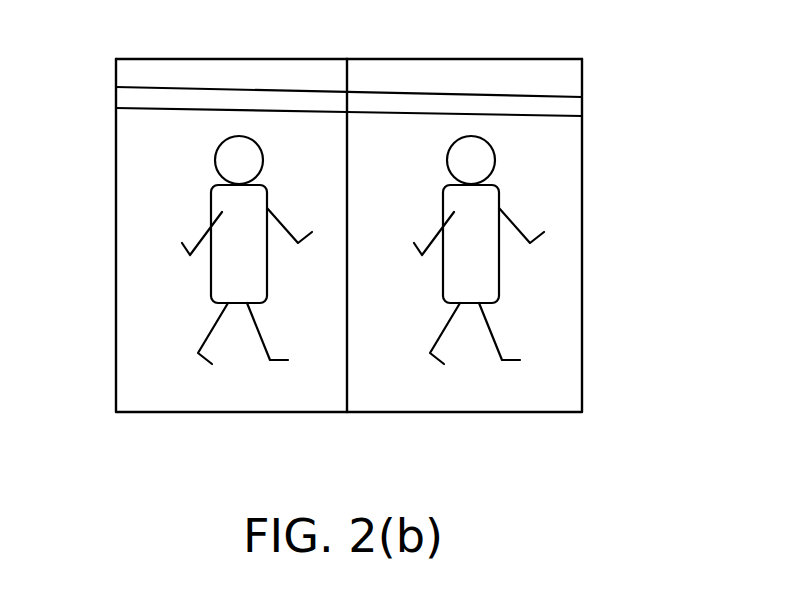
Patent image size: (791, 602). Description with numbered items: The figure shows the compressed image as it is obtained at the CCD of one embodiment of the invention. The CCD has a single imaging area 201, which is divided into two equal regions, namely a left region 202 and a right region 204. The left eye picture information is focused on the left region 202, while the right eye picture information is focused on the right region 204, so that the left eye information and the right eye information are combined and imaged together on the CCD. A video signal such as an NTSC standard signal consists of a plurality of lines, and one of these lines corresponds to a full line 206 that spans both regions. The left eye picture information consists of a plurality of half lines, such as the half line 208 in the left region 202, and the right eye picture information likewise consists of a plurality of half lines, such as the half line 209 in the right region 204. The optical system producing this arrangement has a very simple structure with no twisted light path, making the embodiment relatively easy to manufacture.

The imaging area 201 is at (255, 413).
The left region 202 is at (132, 77).
The right region 204 is at (540, 77).
The full line 206 is at (410, 97).
The half line 208 is at (145, 105).
The half line 209 is at (557, 115).